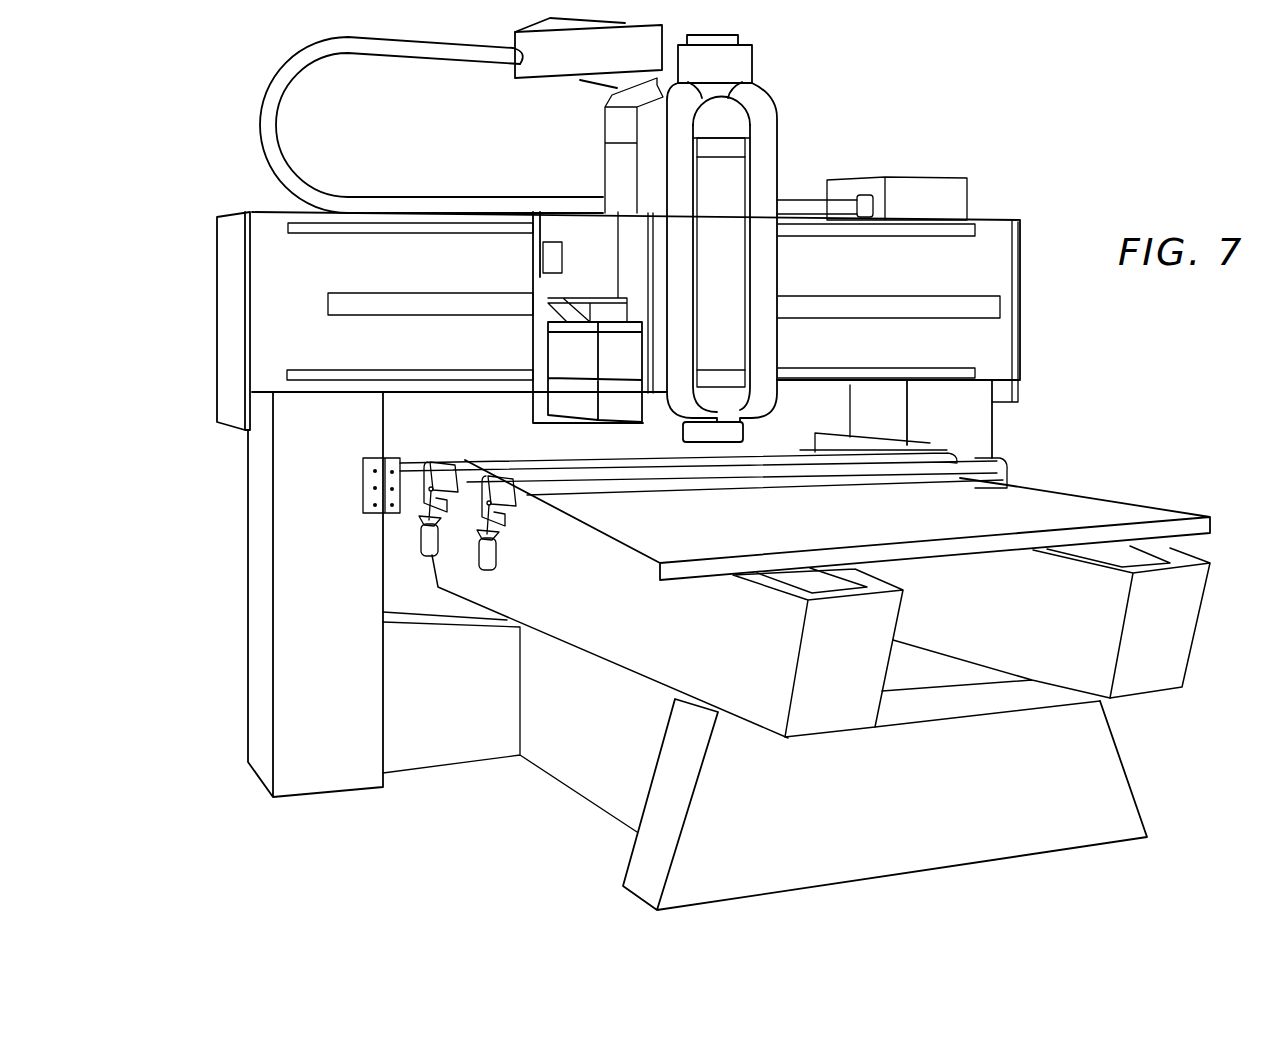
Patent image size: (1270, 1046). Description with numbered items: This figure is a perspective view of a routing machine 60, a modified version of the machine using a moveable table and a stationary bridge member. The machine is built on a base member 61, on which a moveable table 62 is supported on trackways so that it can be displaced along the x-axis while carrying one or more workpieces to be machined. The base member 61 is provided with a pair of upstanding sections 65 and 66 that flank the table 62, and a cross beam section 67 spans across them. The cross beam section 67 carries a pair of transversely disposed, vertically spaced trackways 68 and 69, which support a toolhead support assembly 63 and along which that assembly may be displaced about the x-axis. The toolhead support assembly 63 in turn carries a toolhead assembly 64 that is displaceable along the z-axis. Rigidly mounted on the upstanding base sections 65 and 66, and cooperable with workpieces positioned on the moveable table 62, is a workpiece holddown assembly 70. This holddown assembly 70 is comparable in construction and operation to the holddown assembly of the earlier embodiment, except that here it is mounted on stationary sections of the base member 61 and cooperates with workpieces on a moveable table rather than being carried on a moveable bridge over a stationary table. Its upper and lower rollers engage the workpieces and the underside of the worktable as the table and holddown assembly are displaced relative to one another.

The routing machine 60 is at (613, 230).
The base member 61 is at (1128, 744).
The moveable table 62 is at (1122, 502).
The toolhead support assembly 63 is at (535, 262).
The toolhead assembly 64 is at (785, 271).
The upstanding section 65 is at (247, 502).
The upstanding section 66 is at (993, 428).
The cross beam section 67 is at (215, 340).
The trackway 68 is at (345, 234).
The trackway 69 is at (391, 370).
The workpiece holddown assembly 70 is at (645, 497).